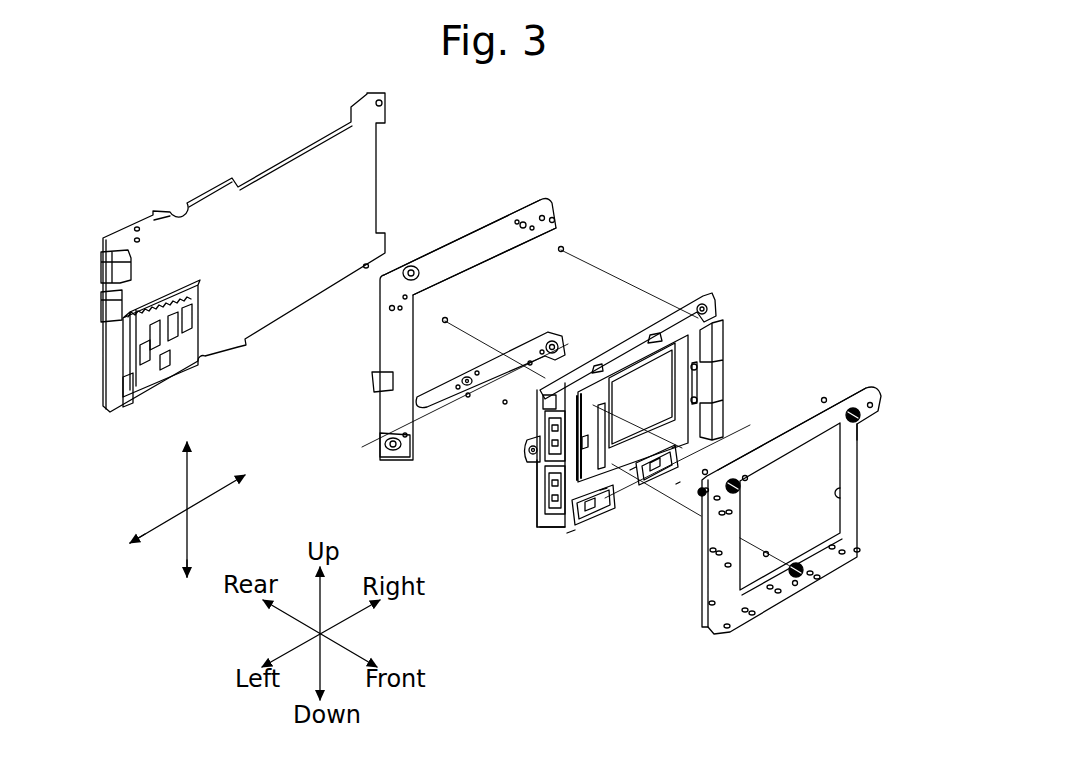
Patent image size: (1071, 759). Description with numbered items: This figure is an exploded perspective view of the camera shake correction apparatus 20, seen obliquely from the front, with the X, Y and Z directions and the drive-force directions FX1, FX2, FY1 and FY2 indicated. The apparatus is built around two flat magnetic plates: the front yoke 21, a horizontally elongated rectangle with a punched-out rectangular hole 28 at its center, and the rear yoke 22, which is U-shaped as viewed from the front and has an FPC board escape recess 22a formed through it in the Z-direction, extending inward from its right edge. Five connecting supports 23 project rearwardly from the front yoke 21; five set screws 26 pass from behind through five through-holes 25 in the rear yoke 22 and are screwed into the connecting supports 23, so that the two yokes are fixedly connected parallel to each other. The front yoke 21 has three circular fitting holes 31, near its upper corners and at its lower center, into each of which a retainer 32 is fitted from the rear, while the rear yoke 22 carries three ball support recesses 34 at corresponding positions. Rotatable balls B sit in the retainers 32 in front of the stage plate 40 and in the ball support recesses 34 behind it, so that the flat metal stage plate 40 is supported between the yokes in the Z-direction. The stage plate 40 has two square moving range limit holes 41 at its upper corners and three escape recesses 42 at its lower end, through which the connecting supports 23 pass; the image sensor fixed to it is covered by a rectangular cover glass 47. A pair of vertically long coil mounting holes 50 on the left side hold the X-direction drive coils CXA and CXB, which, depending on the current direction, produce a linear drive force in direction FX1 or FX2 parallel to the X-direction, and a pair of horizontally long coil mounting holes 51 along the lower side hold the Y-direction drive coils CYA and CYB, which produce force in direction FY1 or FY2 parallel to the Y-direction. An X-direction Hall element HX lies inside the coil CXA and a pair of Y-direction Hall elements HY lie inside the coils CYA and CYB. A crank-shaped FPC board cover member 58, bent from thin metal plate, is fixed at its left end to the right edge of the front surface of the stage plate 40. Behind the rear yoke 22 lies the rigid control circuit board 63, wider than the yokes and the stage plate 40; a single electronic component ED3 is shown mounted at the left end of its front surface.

The control circuit board 63 is at (388, 107).
The electronic component ED3 is at (190, 340).
The camera shake correction apparatus 20 is at (562, 93).
The front yoke 21 is at (880, 400).
The rear yoke 22 is at (560, 214).
The FPC board escape recess 22a is at (487, 254).
The connecting support 23 is at (856, 395).
The through-hole 25 is at (540, 215).
The set screw 26 is at (553, 219).
The rectangular hole 28 is at (843, 493).
The fitting hole 31 is at (851, 407).
The retainer 32 is at (866, 413).
The ball support recess 34 is at (522, 222).
The stage plate 40 is at (710, 298).
The moving range limit hole 41 is at (710, 308).
The escape recess 42 is at (607, 500).
The cover glass 47 is at (607, 408).
The coil mounting hole 50 is at (540, 468).
The coil mounting hole 51 is at (678, 457).
The FPC board cover member 58 is at (723, 397).
The ball B is at (563, 248).
The X-direction Hall element HX is at (600, 412).
The Y-direction Hall element HY is at (573, 603).
The X-direction drive coil CXA is at (551, 437).
The X-direction drive coil CXB is at (551, 517).
The Y-direction drive coil CYA is at (613, 522).
The Y-direction drive coil CYB is at (641, 486).
The drive force direction FX1 is at (215, 500).
The drive force direction FX2 is at (116, 550).
The drive force direction FY1 is at (190, 496).
The drive force direction FY2 is at (187, 584).
The X-direction X is at (287, 643).
The Y-direction Y is at (322, 603).
The Z-direction Z is at (347, 643).